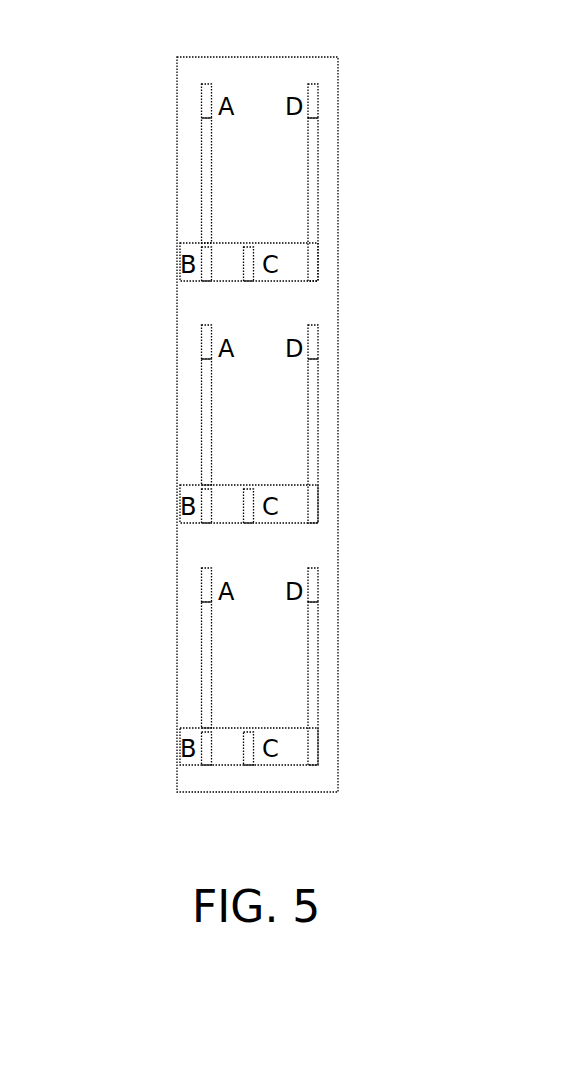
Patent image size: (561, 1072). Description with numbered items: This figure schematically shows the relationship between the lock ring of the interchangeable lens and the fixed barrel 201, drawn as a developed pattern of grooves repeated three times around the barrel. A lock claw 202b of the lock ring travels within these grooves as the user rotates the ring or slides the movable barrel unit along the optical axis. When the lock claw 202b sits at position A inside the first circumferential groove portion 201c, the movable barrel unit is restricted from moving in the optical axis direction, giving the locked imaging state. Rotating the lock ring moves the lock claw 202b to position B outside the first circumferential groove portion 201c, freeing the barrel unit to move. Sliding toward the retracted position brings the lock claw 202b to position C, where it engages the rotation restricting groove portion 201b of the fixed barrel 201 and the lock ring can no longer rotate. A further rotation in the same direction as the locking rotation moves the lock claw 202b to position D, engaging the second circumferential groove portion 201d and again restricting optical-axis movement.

The fixed barrel 201 is at (257, 81).
The rotation restricting groove portion 201b is at (298, 268).
The first circumferential groove portion 201c is at (203, 152).
The second circumferential groove portion 201d is at (320, 185).
The lock claw 202b is at (308, 105).